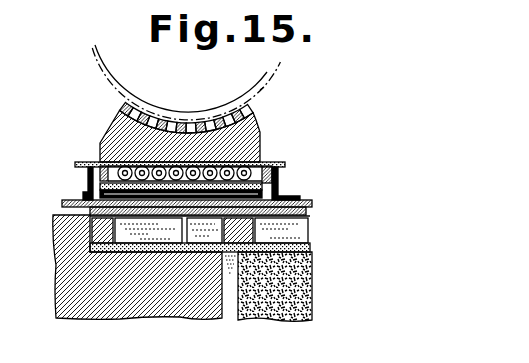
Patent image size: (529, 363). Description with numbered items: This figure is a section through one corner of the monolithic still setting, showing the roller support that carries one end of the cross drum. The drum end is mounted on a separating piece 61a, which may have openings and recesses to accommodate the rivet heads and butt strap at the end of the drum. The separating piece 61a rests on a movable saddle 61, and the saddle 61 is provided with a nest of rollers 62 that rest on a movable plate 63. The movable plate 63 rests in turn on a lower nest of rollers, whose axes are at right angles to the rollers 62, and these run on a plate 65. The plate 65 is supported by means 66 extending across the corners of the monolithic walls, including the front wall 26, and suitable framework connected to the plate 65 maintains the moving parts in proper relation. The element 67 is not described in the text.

The front wall 26 is at (314, 287).
The movable saddle 61 is at (260, 127).
The separating piece 61a is at (122, 116).
The nest of rollers 62 is at (230, 160).
The movable plate 63 is at (270, 191).
The plate 65 is at (303, 206).
The supporting means 66 is at (83, 233).
The roller bearing 67 is at (262, 186).